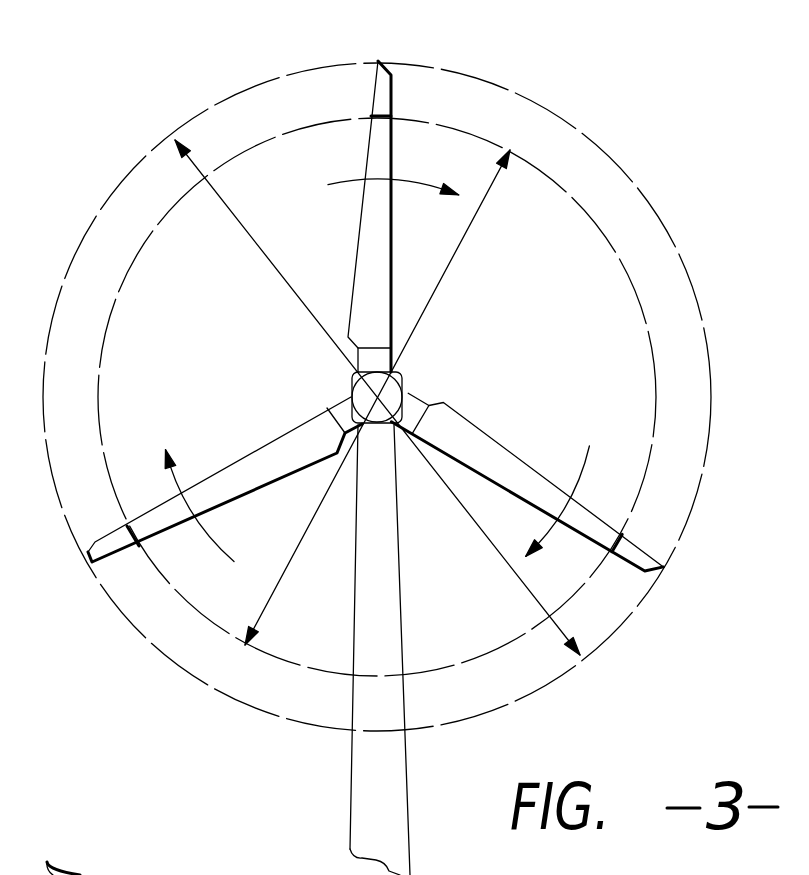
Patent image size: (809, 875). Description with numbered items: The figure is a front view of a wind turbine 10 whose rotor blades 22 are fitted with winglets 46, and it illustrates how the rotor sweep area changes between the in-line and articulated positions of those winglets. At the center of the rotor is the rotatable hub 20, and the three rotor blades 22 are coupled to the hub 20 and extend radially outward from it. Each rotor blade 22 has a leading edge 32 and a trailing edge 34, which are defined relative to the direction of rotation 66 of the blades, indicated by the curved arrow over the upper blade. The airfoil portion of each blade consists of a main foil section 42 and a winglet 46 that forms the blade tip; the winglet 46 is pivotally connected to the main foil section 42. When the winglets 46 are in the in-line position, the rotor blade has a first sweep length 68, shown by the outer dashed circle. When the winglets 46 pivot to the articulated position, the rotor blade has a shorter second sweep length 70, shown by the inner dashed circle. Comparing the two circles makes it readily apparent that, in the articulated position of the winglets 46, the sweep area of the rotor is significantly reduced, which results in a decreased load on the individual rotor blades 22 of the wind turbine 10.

The wind turbine 10 is at (532, 447).
The hub 20 is at (385, 393).
The rotor blades 22 is at (292, 428).
The leading edge 32 is at (393, 267).
The trailing edge 34 is at (462, 418).
The main foil section 42 is at (362, 292).
The winglet 46 is at (378, 90).
The direction of rotation 66 is at (345, 182).
The first sweep length 68 is at (638, 197).
The second sweep length 70 is at (618, 260).